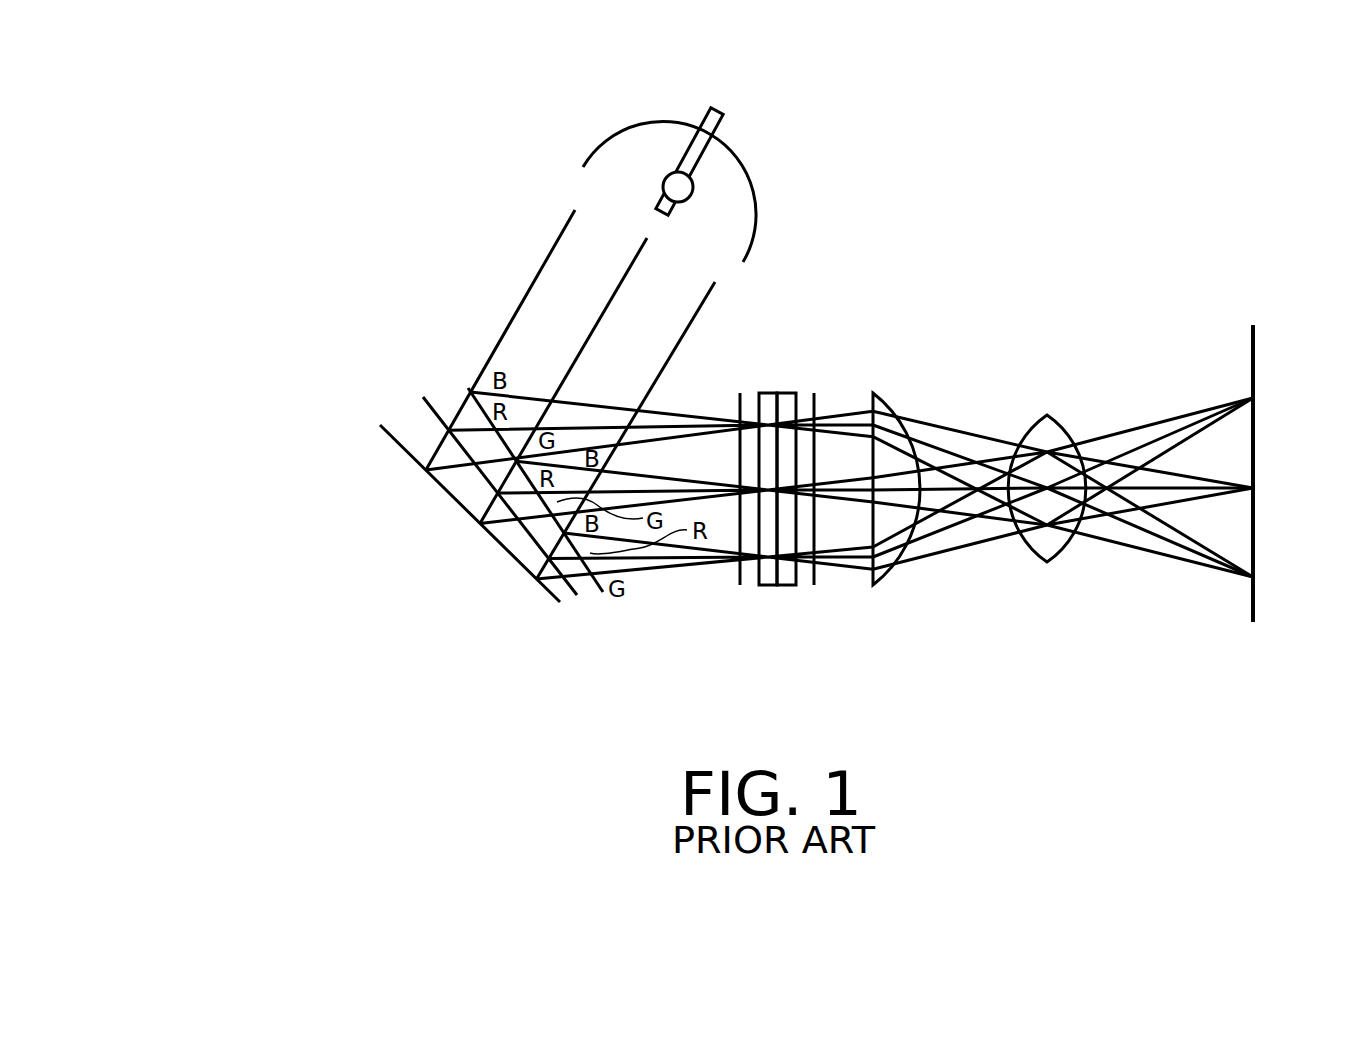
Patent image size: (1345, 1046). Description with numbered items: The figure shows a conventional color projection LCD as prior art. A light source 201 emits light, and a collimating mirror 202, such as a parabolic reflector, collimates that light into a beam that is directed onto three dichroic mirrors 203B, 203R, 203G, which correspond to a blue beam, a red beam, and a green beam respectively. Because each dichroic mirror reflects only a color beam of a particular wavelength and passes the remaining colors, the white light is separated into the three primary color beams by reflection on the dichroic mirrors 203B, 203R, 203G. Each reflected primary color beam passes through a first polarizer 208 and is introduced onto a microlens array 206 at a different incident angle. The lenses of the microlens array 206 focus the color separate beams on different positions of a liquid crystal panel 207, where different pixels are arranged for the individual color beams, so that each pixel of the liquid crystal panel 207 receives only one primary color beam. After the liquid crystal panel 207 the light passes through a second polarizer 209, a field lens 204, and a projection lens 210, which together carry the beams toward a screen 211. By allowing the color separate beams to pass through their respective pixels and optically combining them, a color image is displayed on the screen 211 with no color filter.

The light source 201 is at (693, 187).
The collimating mirror 202 is at (758, 200).
The dichroic mirror 203B is at (465, 387).
The dichroic mirror 203R is at (437, 417).
The dichroic mirror 203G is at (457, 503).
The field lens 204 is at (879, 584).
The microlens array 206 is at (763, 588).
The liquid crystal panel 207 is at (789, 393).
The first polarizer 208 is at (740, 582).
The second polarizer 209 is at (815, 585).
The projection lens 210 is at (1073, 428).
The screen 211 is at (1253, 338).